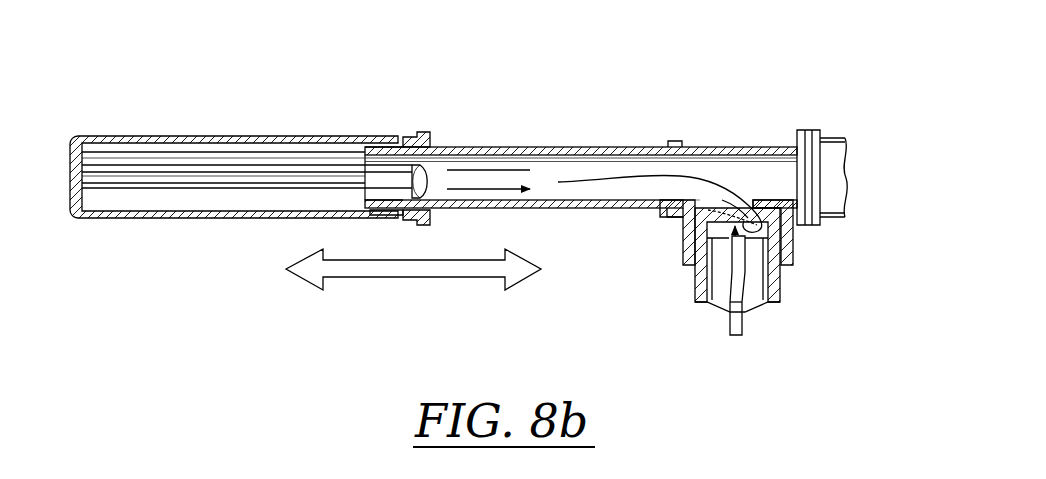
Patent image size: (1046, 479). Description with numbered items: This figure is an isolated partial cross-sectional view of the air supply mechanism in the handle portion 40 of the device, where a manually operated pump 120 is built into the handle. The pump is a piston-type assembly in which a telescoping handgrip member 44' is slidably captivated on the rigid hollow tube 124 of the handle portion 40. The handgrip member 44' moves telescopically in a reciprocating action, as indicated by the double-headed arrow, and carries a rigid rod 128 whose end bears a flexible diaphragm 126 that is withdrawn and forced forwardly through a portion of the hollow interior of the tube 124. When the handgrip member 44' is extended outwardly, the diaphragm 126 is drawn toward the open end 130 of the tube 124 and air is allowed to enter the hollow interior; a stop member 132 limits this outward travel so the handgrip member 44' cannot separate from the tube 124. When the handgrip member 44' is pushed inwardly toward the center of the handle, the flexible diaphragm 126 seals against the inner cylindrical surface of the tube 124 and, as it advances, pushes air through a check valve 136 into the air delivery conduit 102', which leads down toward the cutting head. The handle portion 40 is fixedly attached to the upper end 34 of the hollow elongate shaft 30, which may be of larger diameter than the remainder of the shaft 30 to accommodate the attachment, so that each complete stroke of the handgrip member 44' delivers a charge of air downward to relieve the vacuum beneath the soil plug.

The telescoping handgrip member 44' is at (234, 147).
The manually operated pump 120 is at (374, 126).
The stop member 132 is at (385, 122).
The flexible diaphragm 126 is at (447, 157).
The rigid hollow tube 124 is at (552, 150).
The open end 130 is at (366, 165).
The rigid rod 128 is at (203, 176).
The check valve 136 is at (739, 208).
The handle portion 40 is at (740, 50).
The upper end of the shaft 34 is at (776, 272).
The elongate shaft 30 is at (783, 295).
The air delivery conduit 102' is at (793, 293).